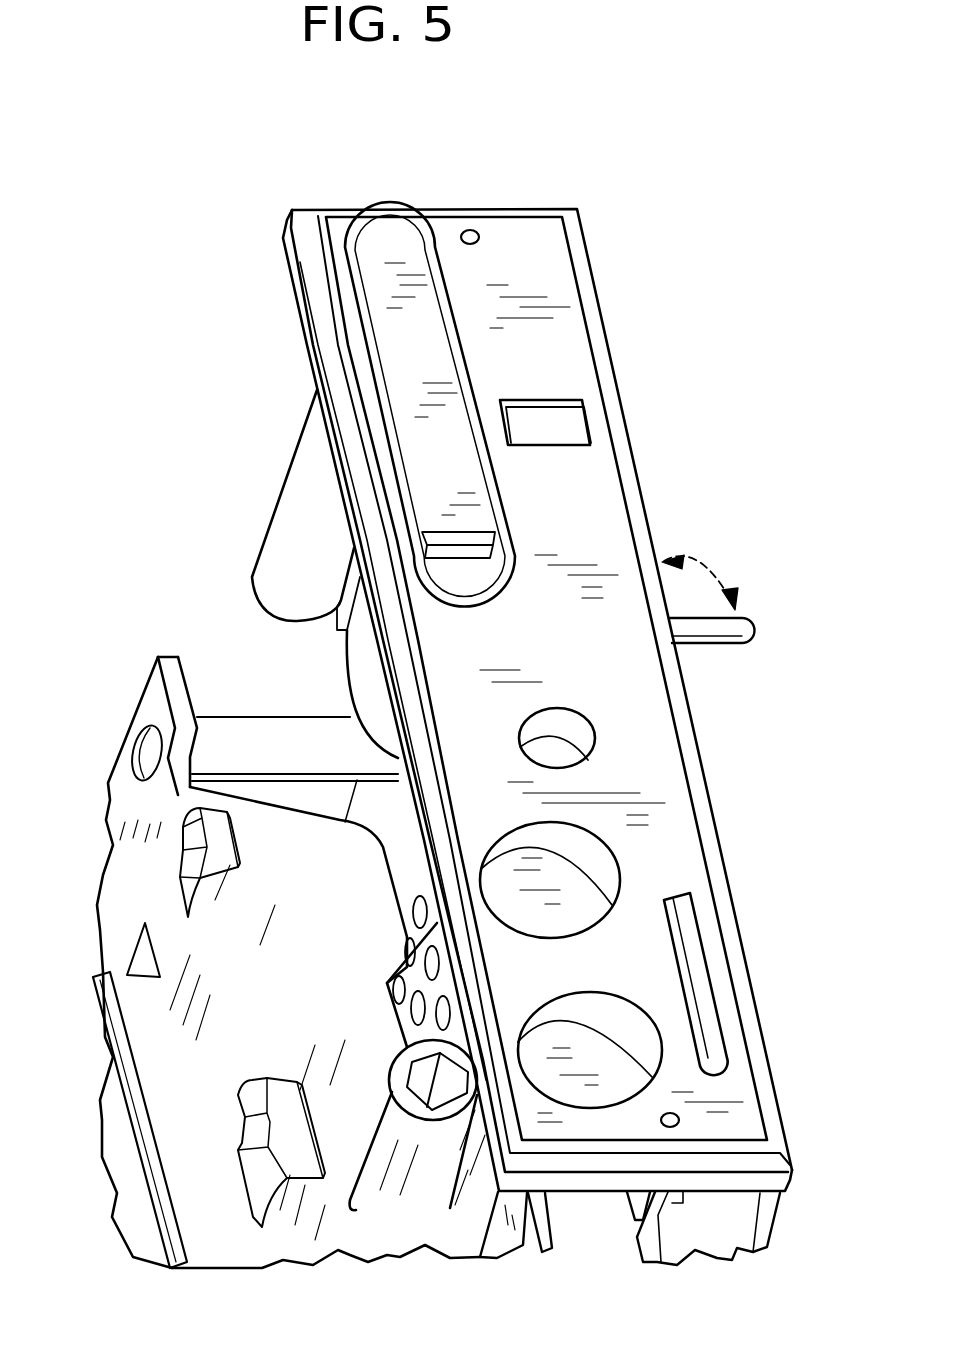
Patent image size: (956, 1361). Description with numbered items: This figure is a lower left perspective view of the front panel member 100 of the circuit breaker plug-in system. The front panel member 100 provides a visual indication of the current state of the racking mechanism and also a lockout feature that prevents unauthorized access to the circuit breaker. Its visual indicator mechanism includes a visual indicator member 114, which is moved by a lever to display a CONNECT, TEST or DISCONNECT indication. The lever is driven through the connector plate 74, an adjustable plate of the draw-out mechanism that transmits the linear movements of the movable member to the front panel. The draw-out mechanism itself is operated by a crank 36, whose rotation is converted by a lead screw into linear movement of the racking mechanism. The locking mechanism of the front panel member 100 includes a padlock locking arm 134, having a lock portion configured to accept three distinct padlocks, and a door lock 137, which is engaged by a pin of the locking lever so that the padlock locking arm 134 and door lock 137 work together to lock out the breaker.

The front panel member 100 is at (236, 356).
The visual indicator member 114 is at (552, 428).
The door lock 137 is at (730, 695).
The padlock locking arm 134 is at (710, 958).
The connector plate 74 is at (388, 1025).
The crank 36 is at (401, 1165).